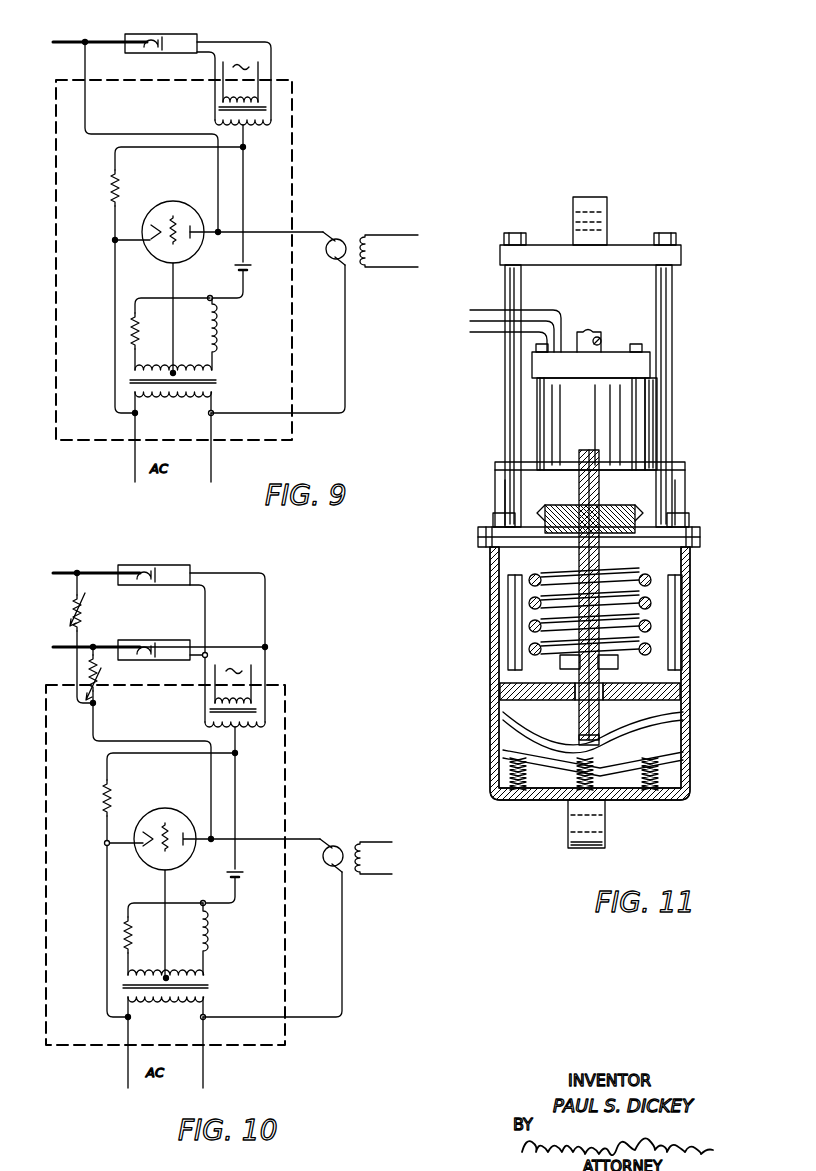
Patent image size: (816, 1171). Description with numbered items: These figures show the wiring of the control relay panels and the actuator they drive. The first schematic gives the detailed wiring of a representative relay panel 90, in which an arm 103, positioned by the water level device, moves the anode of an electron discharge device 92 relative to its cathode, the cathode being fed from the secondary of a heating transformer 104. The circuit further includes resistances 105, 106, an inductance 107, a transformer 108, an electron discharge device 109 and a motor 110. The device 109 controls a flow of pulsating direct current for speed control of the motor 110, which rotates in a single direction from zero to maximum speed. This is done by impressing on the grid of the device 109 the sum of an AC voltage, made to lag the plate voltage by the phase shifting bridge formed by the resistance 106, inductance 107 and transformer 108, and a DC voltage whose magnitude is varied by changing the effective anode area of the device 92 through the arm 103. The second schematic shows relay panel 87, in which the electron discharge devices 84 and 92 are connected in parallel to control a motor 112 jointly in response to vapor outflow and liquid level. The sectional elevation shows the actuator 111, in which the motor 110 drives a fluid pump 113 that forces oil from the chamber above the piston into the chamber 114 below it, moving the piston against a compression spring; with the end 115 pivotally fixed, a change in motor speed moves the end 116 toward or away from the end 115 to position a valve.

In FIG. 10, the electron discharge device 84 is at (152, 565).
In FIG. 10, the relay panel 87 is at (285, 765).
In FIG. 9, the relay panel 90 is at (301, 156).
In FIG. 9, the electron discharge device 92 is at (148, 52).
In FIG. 10, the electron discharge device 92 is at (152, 640).
In FIG. 9, the arm 103 is at (81, 41).
In FIG. 10, the arm 103 is at (79, 649).
In FIG. 9, the heating transformer 104 is at (276, 101).
In FIG. 9, the resistance 105 is at (120, 190).
In FIG. 9, the resistance 106 is at (136, 352).
In FIG. 9, the inductance 107 is at (214, 332).
In FIG. 9, the transformer 108 is at (189, 381).
In FIG. 9, the electron discharge device 109 is at (171, 202).
In FIG. 9, the motor 110 is at (370, 240).
In FIG. 11, the motor 110 is at (654, 399).
In FIG. 11, the actuator 111 is at (680, 562).
In FIG. 10, the motor 112 is at (359, 847).
In FIG. 11, the fluid pump 113 is at (606, 694).
In FIG. 11, the chamber 114 is at (593, 744).
In FIG. 11, the end 115 is at (605, 837).
In FIG. 11, the end 116 is at (597, 197).